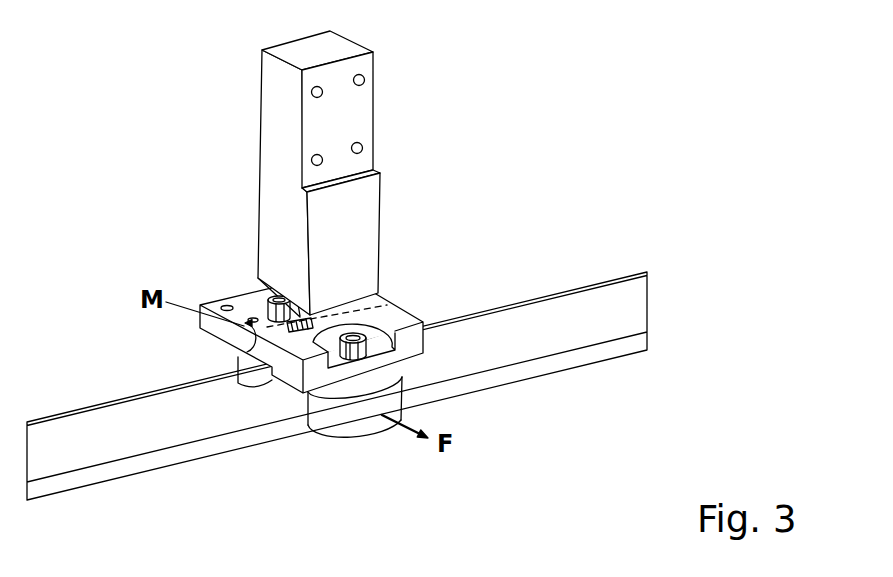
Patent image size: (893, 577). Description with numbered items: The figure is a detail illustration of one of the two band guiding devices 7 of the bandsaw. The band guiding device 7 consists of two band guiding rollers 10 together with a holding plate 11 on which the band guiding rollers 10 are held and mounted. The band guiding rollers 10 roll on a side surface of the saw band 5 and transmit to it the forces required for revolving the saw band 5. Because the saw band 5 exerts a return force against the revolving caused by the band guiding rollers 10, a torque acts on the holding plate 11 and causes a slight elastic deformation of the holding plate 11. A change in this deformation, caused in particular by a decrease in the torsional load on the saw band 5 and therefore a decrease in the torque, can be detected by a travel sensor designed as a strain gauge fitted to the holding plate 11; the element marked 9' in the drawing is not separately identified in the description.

The saw band 5 is at (582, 322).
The band guiding device 7 is at (240, 189).
The clamping element 9' is at (226, 282).
The band guiding rollers 10 is at (243, 361).
The holding plate 11 is at (388, 318).